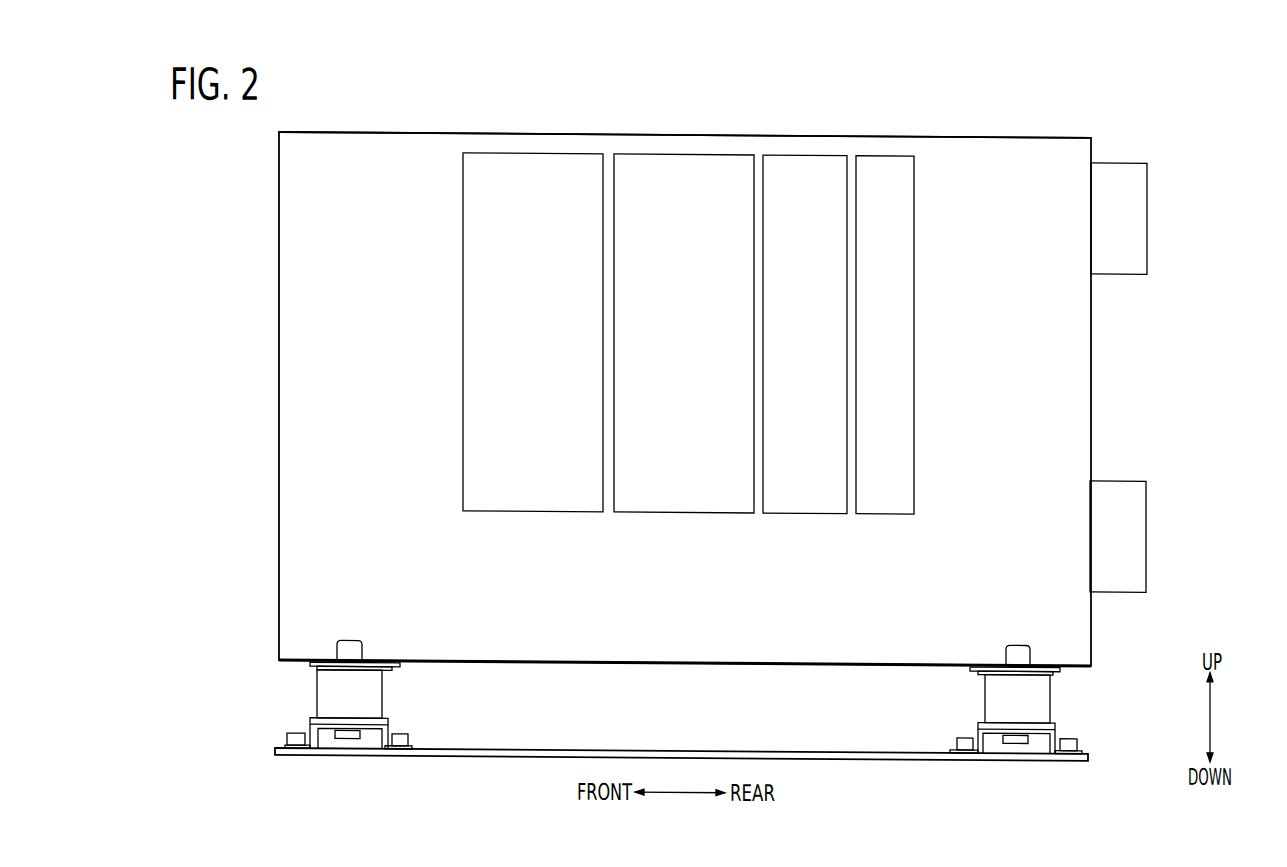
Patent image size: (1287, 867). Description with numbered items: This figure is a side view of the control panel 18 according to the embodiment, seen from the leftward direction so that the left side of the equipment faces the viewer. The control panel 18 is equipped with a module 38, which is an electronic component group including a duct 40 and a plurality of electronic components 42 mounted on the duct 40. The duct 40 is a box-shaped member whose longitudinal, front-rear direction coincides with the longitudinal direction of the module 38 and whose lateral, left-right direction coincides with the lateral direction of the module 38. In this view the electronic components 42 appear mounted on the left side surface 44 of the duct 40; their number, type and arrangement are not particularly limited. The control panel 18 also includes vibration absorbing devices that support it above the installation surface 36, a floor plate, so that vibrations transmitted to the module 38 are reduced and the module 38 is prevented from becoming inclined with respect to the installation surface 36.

The control panel 18 is at (262, 166).
The installation surface 36 is at (908, 756).
The module 38 is at (548, 332).
The duct 40 is at (300, 232).
The electronic components 42 is at (453, 283).
The left side surface 44 is at (995, 193).